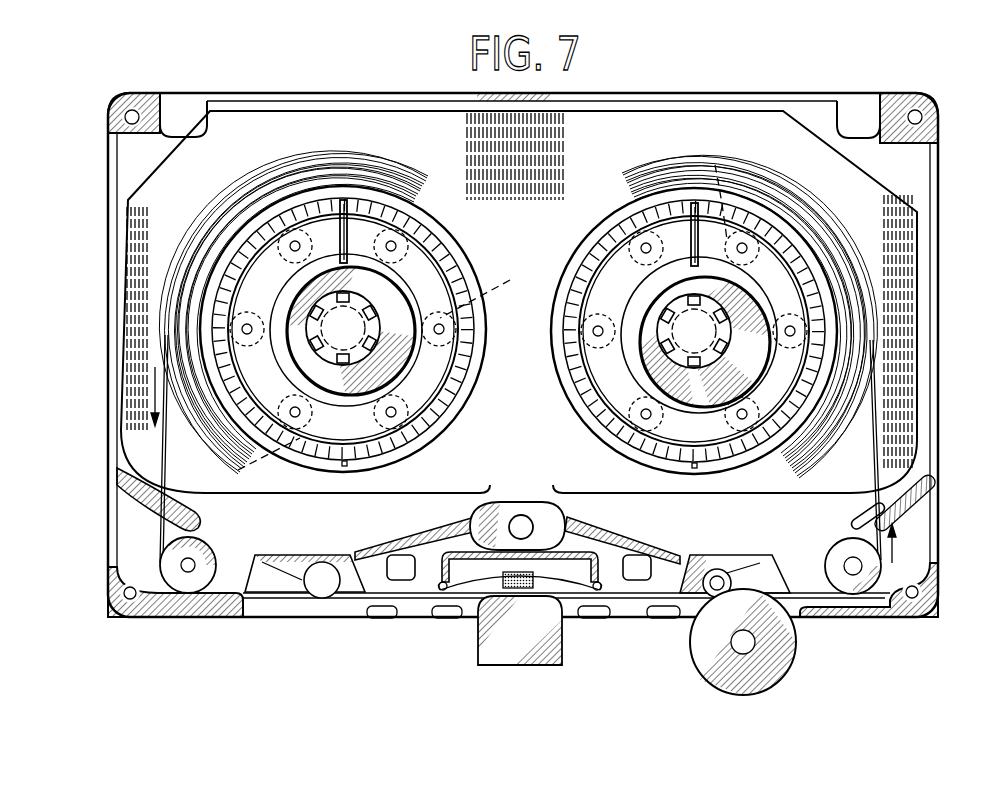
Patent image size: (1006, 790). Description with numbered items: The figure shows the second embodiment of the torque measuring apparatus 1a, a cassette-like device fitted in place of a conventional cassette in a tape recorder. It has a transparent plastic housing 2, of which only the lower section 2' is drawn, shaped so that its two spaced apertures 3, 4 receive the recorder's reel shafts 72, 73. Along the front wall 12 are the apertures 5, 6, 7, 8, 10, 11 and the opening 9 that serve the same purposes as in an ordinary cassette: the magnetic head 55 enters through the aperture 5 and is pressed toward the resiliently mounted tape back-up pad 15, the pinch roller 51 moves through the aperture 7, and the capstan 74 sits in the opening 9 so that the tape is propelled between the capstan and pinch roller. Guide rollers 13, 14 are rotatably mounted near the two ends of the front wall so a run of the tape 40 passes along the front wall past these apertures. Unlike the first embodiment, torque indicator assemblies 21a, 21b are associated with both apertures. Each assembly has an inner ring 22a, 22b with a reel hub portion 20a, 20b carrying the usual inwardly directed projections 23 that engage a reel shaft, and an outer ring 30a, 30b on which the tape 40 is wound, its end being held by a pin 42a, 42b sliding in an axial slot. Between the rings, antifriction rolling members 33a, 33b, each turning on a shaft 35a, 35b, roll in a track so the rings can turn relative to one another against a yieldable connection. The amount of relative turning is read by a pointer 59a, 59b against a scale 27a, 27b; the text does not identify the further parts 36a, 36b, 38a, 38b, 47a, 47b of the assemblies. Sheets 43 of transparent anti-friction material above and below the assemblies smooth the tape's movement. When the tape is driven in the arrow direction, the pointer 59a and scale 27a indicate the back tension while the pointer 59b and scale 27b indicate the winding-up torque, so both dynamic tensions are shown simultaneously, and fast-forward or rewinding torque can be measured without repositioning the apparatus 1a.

The torque measuring apparatus 1a is at (945, 150).
The housing 2 is at (949, 353).
The lower section of the housing 2' is at (546, 322).
The sheets of transparent anti-friction material 43 is at (148, 300).
The outer ring 30a is at (250, 440).
The outer ring 30b is at (560, 393).
The torque indicator assembly 21a is at (410, 200).
The torque indicator assembly 21b is at (752, 192).
The scale 27a is at (420, 238).
The scale 27b is at (780, 255).
The graduated ring 38a is at (402, 462).
The graduated ring 38b is at (718, 462).
The flange ring 36a is at (441, 265).
The flange ring 36b is at (798, 300).
The flange step 47a is at (456, 290).
The flange step 47b is at (800, 290).
The inner ring 22a is at (333, 378).
The inner ring 22b is at (695, 388).
The aperture 3 is at (375, 340).
The aperture 4 is at (722, 355).
The reel hub portion 20a is at (303, 298).
The reel hub portion 20b is at (678, 375).
The inwardly directed projections 23 is at (326, 350).
The shaft 35a is at (394, 416).
The shaft 35b is at (745, 418).
The pointer 59a is at (347, 205).
The pointer 59b is at (692, 212).
The reel shaft 72 is at (358, 232).
The reel shaft 73 is at (639, 292).
The pin 42a is at (344, 466).
The pin 42b is at (696, 468).
The antifriction rolling members 33a is at (258, 467).
The antifriction rolling members 33b is at (583, 228).
The front wall 12 is at (181, 612).
The aperture 5 is at (468, 613).
The aperture 7 is at (688, 612).
The tape 40 is at (160, 548).
The guide roller 13 is at (200, 555).
The guide roller 14 is at (858, 590).
The aperture 6 is at (337, 612).
The aperture 8 is at (312, 590).
The aperture 10 is at (400, 580).
The aperture 11 is at (636, 580).
The tape back-up pad 15 is at (523, 590).
The magnetic head 55 is at (560, 632).
The opening 9 is at (710, 575).
The capstan 74 is at (722, 580).
The pinch roller 51 is at (792, 632).